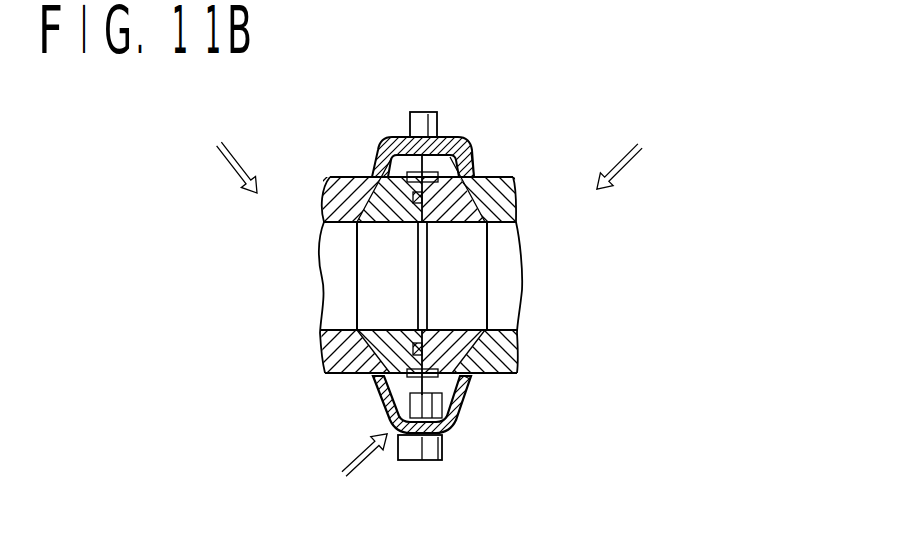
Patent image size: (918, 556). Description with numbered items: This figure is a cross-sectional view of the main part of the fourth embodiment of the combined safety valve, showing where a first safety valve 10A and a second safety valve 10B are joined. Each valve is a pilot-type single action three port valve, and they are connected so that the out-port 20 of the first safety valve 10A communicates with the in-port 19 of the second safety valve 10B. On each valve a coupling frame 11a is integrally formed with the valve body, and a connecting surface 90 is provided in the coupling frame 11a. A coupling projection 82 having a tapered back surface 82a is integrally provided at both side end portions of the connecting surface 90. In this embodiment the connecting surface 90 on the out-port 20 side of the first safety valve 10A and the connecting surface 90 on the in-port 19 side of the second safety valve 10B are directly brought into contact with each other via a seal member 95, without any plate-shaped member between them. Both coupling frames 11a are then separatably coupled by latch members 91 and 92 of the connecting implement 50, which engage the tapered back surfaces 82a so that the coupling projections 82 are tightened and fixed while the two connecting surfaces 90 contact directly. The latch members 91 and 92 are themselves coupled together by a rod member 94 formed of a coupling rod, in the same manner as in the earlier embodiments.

The first safety valve 10A is at (625, 152).
The second safety valve 10B is at (221, 152).
The coupling frame 11a is at (392, 197).
The in-port 19 is at (380, 273).
The out-port 20 is at (443, 275).
The connecting implement 50 is at (355, 473).
The coupling projection 82 is at (400, 139).
The tapered back surface 82a is at (470, 152).
The connecting surface 90 is at (422, 222).
The latch member 91 is at (468, 434).
The latch member 92 is at (470, 138).
The rod member 94 is at (425, 460).
The seal member 95 is at (417, 350).